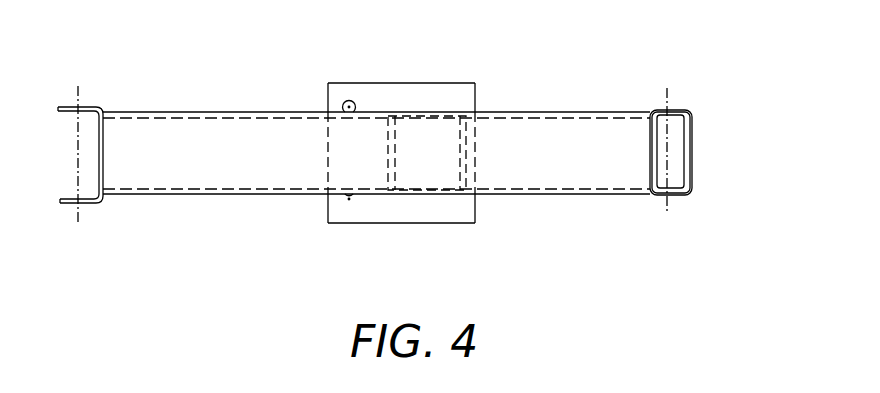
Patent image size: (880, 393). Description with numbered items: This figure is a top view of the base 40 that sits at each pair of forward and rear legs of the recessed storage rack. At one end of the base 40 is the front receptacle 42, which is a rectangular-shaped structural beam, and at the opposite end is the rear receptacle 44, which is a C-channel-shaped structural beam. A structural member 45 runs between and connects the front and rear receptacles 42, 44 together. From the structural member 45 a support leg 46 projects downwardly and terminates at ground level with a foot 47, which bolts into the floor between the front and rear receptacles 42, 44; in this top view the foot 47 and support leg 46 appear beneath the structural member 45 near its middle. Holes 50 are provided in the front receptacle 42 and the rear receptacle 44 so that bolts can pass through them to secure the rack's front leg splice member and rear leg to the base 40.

The base 40 is at (220, 84).
The front receptacle 42 is at (693, 128).
The rear receptacle 44 is at (100, 205).
The structural member 45 is at (285, 126).
The support leg 46 is at (462, 152).
The foot 47 is at (413, 86).
The holes 50 is at (82, 103).